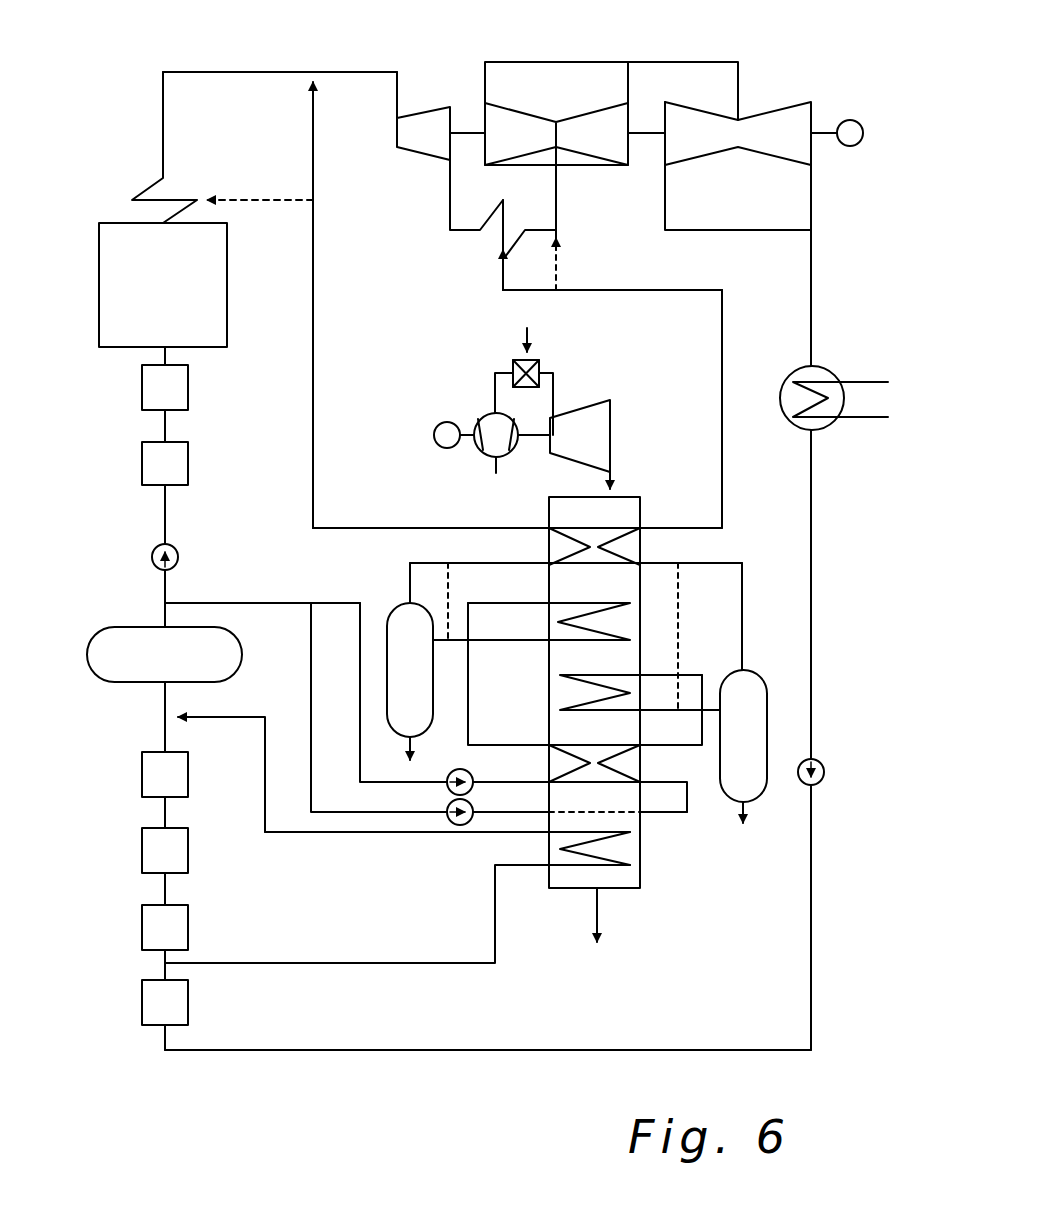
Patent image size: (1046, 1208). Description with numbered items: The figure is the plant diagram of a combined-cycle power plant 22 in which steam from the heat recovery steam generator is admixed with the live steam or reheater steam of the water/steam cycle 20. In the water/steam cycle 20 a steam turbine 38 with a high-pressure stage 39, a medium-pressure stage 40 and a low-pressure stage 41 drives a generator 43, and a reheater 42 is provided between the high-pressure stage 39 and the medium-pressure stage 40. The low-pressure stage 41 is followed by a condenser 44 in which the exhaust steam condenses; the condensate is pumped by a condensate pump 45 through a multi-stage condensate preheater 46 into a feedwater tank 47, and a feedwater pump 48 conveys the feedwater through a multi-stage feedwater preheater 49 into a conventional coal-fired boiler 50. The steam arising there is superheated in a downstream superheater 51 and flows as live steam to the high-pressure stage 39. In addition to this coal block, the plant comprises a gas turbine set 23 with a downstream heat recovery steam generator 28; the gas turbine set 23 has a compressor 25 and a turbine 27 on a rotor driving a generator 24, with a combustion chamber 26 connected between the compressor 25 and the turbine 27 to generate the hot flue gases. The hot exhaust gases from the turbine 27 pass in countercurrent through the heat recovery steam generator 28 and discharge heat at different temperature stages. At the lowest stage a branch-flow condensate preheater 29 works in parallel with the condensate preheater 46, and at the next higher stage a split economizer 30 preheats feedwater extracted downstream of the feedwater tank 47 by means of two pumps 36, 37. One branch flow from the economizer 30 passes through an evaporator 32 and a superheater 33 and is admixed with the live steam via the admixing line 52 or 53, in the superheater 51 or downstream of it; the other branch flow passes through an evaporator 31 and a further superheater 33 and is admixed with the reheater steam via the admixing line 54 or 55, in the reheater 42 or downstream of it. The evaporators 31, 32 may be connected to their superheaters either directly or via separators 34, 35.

The water/steam cycle 20 is at (812, 990).
The combined-cycle power plant 22 is at (364, 341).
The gas turbine set 23 is at (408, 462).
The generator 24 is at (443, 430).
The compressor 25 is at (493, 450).
The combustion chamber 26 is at (542, 360).
The turbine 27 is at (600, 435).
The heat recovery steam generator 28 is at (570, 888).
The branch-flow condensate preheater 29 is at (630, 867).
The economizer 30 is at (630, 758).
The evaporator 31 is at (560, 707).
The evaporator 32 is at (620, 603).
The superheater 33 is at (563, 547).
The separator 34 is at (400, 622).
The separator 35 is at (750, 700).
The pump 36 is at (447, 795).
The pump 37 is at (463, 822).
The steam turbine 38 is at (828, 86).
The high-pressure stage 39 is at (440, 125).
The medium-pressure stage 40 is at (533, 120).
The low-pressure stage 41 is at (775, 125).
The reheater 42 is at (500, 255).
The generator 43 is at (852, 140).
The condenser 44 is at (818, 423).
The condensate pump 45 is at (838, 776).
The condensate preheater 46 is at (105, 880).
The feedwater tank 47 is at (128, 673).
The feedwater pump 48 is at (152, 563).
The feedwater preheater 49 is at (108, 429).
The boiler 50 is at (181, 305).
The superheater 51 is at (128, 202).
The admixing line 52 is at (275, 197).
The admixing line 53 is at (313, 118).
The admixing line 54 is at (527, 292).
The admixing line 55 is at (556, 268).